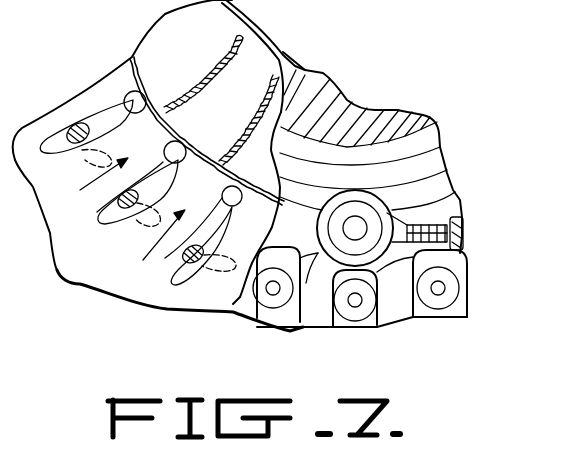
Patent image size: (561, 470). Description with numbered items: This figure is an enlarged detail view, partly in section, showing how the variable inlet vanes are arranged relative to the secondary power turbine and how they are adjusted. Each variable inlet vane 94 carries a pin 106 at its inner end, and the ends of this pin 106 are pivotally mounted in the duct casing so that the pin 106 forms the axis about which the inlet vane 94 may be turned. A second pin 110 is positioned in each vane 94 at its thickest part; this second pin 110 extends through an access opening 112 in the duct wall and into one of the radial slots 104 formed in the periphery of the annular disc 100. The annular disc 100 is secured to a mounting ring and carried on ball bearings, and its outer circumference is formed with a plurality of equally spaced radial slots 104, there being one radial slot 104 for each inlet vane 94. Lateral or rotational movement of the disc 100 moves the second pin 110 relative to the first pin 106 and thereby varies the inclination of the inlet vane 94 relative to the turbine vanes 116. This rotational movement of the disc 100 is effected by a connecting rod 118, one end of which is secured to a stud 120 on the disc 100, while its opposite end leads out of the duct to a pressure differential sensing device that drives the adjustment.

The variable inlet vane 94 is at (97, 120).
The annular disc 100 is at (312, 313).
The radial slot 104 is at (252, 322).
The pin 106 is at (136, 80).
The second pin 110 is at (66, 122).
The access opening 112 is at (80, 158).
The turbine vane 116 is at (236, 55).
The connecting rod 118 is at (428, 212).
The stud 120 is at (347, 230).